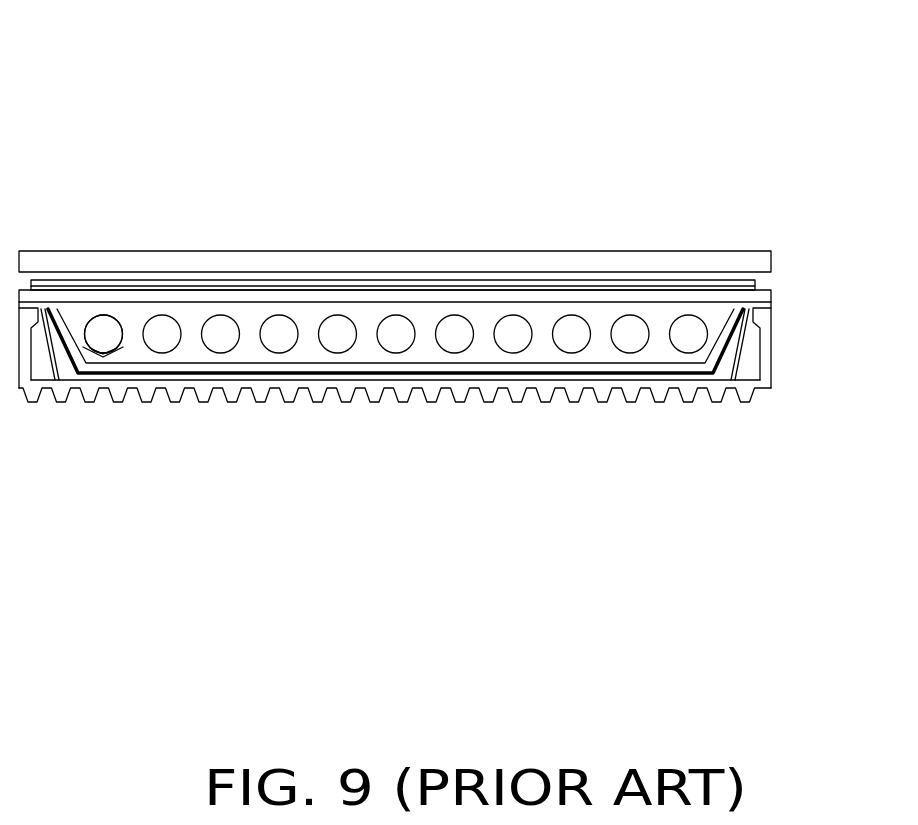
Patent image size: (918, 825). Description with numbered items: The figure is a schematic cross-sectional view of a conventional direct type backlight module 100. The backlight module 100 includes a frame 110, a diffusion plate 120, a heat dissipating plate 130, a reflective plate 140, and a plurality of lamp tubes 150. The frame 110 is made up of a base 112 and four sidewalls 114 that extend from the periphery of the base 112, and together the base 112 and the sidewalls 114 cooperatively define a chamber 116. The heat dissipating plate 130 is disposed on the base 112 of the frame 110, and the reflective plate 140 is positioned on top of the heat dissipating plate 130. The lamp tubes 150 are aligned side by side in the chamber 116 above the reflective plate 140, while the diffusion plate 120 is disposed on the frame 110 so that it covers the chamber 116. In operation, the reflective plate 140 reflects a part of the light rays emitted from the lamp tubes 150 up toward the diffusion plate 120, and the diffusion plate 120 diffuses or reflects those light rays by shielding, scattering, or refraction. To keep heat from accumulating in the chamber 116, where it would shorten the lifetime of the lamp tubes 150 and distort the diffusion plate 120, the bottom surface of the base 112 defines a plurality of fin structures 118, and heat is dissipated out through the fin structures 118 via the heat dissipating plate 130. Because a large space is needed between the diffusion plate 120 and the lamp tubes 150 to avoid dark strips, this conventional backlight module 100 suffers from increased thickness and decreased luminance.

The direct type backlight module 100 is at (393, 67).
The frame 110 is at (834, 336).
The base 112 is at (765, 350).
The sidewalls 114 is at (733, 386).
The chamber 116 is at (307, 318).
The fin structures 118 is at (566, 400).
The diffusion plate 120 is at (430, 264).
The heat dissipating plate 130 is at (686, 374).
The reflective plate 140 is at (540, 372).
The lamp tubes 150 is at (103, 335).